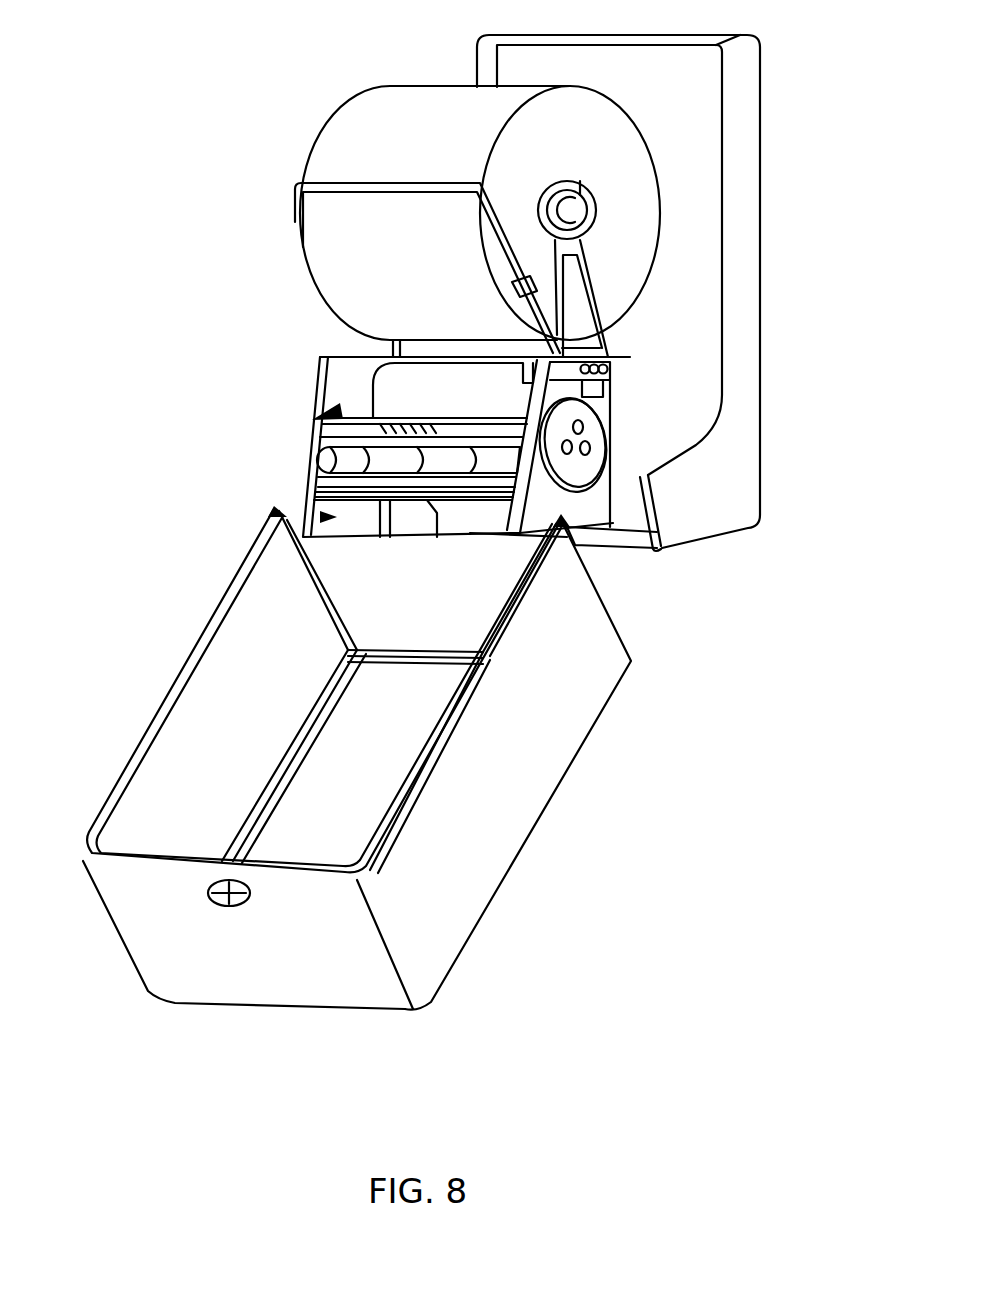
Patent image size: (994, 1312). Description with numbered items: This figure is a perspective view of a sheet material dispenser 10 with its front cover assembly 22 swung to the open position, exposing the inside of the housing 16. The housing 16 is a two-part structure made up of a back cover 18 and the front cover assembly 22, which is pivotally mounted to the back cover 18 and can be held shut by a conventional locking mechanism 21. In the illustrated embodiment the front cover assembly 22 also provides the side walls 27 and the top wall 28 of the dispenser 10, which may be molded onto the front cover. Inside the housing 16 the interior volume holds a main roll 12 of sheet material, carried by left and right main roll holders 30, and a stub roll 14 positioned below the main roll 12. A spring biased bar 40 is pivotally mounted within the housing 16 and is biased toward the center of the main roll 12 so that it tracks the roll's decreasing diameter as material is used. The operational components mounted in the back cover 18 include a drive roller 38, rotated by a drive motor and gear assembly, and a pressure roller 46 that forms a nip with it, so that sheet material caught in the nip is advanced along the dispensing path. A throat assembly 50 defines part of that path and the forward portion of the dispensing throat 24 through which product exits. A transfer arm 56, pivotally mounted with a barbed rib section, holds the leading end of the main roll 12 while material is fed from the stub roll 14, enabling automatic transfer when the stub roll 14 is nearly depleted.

The dispenser 10 is at (212, 92).
The main roll 12 is at (320, 265).
The stub roll 14 is at (393, 395).
The housing 16 is at (708, 308).
The back cover 18 is at (740, 441).
The locking mechanism 21 is at (209, 891).
The front cover assembly 22 is at (579, 748).
The throat 24 is at (491, 542).
The side walls 27 is at (592, 691).
The top wall 28 is at (281, 959).
The main roll holders 30 is at (593, 231).
The drive roller 38 is at (342, 460).
The spring biased bar 40 is at (330, 190).
The pressure roller 46 is at (422, 478).
The throat assembly 50 is at (322, 518).
The transfer arm 56 is at (463, 432).